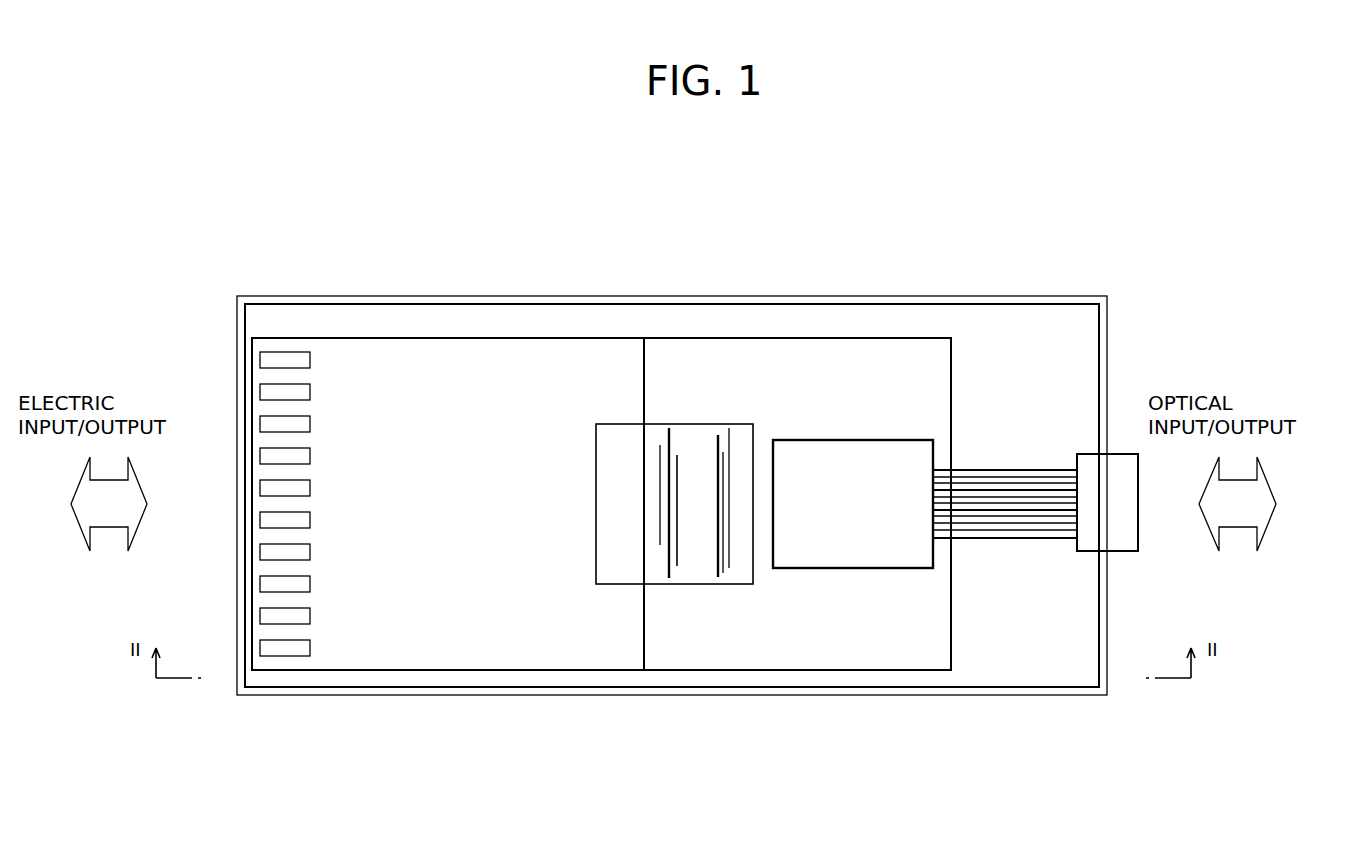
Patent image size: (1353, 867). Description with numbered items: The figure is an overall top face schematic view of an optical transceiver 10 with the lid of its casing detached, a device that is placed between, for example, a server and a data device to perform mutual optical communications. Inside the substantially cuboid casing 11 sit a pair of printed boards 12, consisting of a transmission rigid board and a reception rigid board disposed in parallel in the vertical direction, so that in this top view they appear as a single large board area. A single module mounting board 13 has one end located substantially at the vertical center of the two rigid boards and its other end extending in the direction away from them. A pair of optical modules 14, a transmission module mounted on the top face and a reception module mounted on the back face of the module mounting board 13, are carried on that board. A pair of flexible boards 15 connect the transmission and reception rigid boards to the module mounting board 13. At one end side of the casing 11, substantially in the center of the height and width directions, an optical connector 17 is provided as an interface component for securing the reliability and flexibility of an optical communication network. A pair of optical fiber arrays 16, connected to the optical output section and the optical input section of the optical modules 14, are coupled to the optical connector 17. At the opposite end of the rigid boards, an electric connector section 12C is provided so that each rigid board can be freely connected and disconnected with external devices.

The optical transceiver 10 is at (1004, 240).
The casing 11 is at (703, 296).
The printed boards 12 is at (576, 336).
The electric connector section 12C is at (337, 321).
The module mounting board 13 is at (872, 338).
The optical modules 14 is at (856, 545).
The flexible boards 15 is at (697, 563).
The optical fiber arrays 16 is at (985, 520).
The optical connector 17 is at (1087, 543).